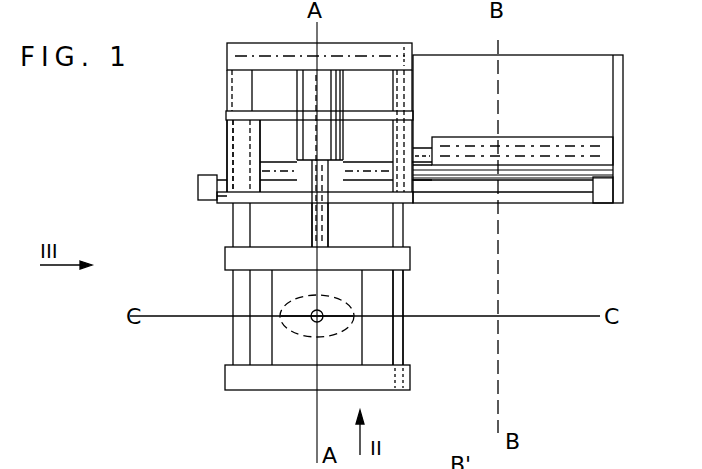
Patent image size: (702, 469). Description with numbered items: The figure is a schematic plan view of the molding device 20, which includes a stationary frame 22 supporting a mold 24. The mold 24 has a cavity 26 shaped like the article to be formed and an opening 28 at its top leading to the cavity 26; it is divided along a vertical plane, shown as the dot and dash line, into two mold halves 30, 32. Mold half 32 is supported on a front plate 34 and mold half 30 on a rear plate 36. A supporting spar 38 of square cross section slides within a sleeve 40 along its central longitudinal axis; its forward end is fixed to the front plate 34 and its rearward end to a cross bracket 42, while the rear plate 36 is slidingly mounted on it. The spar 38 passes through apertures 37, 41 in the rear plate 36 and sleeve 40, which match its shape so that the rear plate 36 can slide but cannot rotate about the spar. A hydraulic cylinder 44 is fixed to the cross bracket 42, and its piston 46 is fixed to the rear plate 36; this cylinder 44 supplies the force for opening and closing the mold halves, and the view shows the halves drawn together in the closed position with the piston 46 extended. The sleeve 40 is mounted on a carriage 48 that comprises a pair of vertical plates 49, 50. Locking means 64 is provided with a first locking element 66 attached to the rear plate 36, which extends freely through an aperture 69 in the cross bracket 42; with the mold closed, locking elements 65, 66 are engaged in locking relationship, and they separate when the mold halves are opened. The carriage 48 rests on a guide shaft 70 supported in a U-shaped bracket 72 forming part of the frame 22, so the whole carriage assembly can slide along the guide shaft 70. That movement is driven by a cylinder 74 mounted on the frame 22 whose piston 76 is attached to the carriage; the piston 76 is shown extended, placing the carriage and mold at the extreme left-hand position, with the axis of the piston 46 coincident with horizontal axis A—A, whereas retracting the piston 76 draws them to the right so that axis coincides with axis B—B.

The molding device 20 is at (212, 46).
The frame 22 is at (565, 60).
The mold 24 is at (252, 330).
The cavity 26 is at (286, 330).
The opening 28 is at (322, 321).
The mold half 30 is at (277, 277).
The mold half 32 is at (305, 357).
The front plate 34 is at (383, 380).
The rear plate 36 is at (422, 243).
The aperture 37 is at (221, 266).
The supporting spar 38 is at (238, 221).
The sleeve 40 is at (228, 128).
The aperture 41 is at (234, 148).
The cross bracket 42 is at (243, 48).
The hydraulic cylinder 44 is at (327, 71).
The piston 46 is at (322, 226).
The carriage 48 is at (185, 262).
The vertical plate 49 is at (413, 116).
The vertical plate 50 is at (409, 203).
The locking means 64 is at (421, 298).
The locking element 65 is at (400, 343).
The first locking element 66 is at (400, 288).
The aperture 69 is at (412, 50).
The guide shaft 70 is at (582, 188).
The U-shaped bracket 72 is at (207, 199).
The cylinder 74 is at (606, 149).
The piston 76 is at (360, 156).